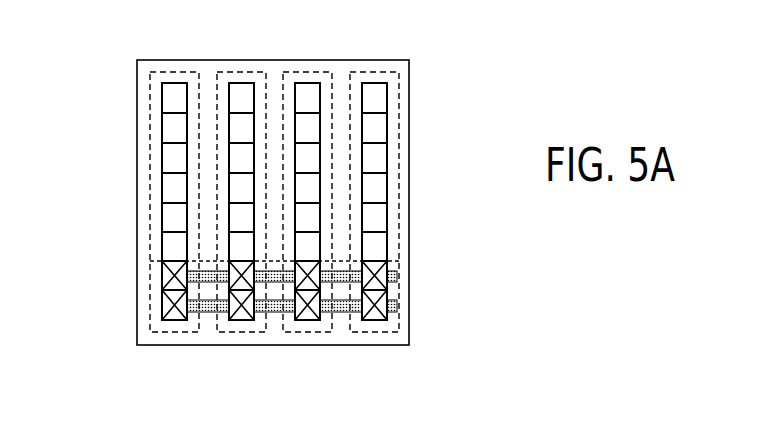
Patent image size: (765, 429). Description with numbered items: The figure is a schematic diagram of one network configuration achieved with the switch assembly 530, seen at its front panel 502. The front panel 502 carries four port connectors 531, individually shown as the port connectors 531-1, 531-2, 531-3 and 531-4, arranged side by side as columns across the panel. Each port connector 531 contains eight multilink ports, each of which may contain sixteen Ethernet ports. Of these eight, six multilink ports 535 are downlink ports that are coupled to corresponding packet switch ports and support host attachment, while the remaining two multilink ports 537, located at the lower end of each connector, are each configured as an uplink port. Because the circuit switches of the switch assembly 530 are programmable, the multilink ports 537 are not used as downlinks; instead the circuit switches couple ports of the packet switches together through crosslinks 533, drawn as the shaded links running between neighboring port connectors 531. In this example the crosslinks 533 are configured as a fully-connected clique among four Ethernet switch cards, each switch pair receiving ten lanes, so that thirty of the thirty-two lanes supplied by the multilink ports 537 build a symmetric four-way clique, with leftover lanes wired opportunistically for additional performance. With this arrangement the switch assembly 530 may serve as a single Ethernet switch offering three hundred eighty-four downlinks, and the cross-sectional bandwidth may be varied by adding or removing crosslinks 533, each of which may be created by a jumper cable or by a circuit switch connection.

The front panel 502 is at (409, 182).
The switch assembly 530 is at (409, 127).
The port connector 531 is at (222, 90).
The port connector 531-1 is at (163, 128).
The port connector 531-2 is at (222, 106).
The port connector 531-3 is at (320, 107).
The port connector 531-4 is at (387, 258).
The crosslink 533 is at (207, 300).
The multilink port 535 is at (150, 196).
The multilink port 537 is at (167, 332).